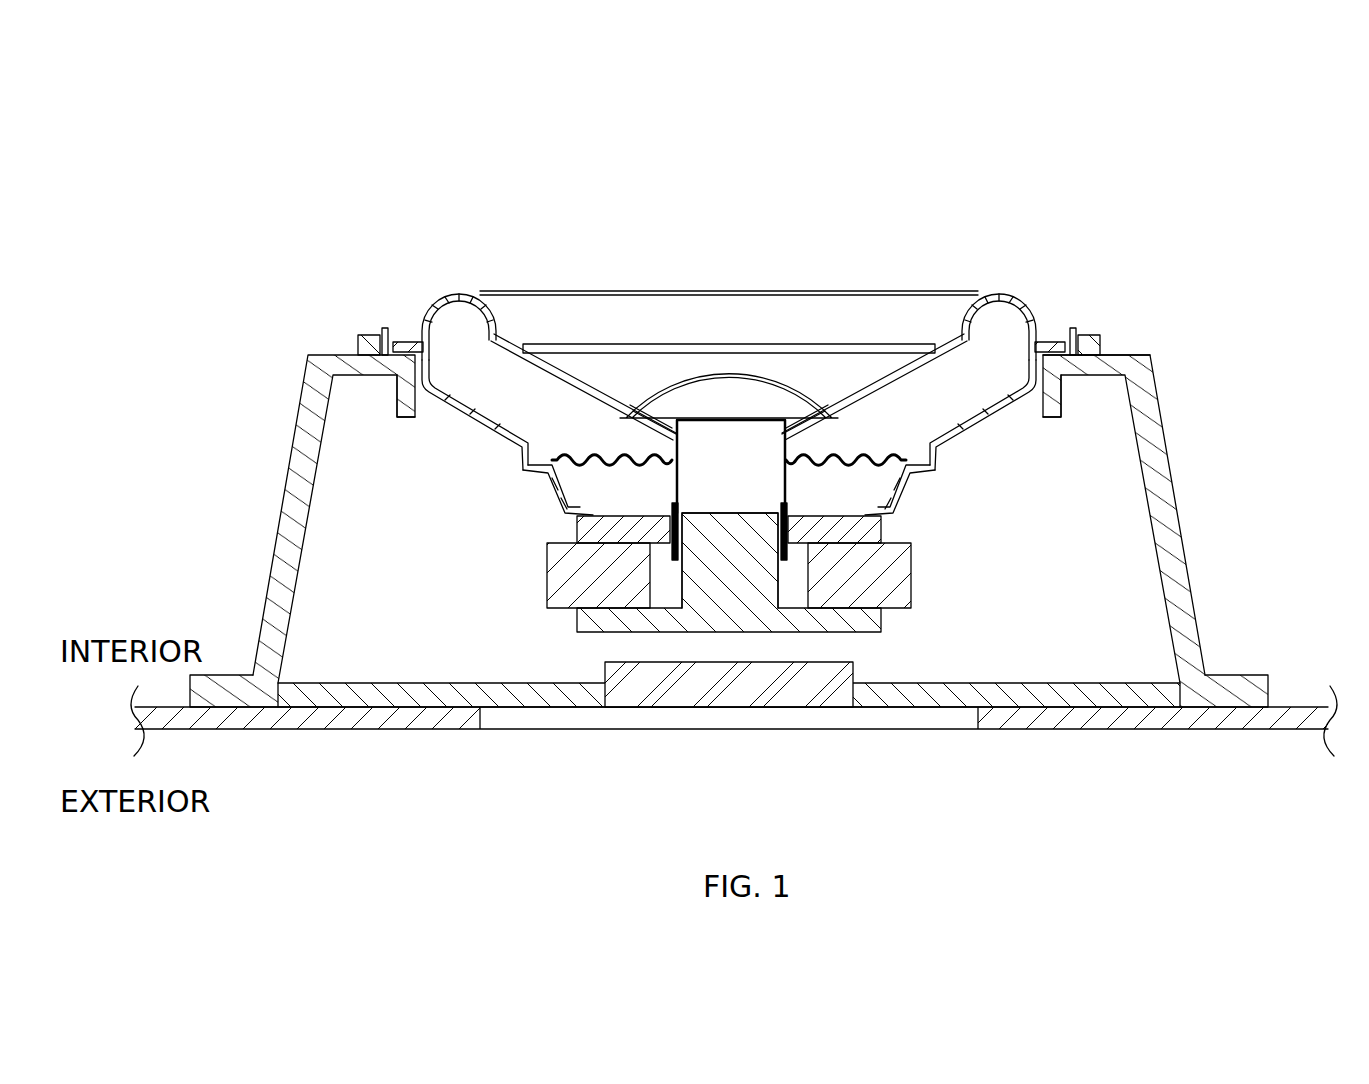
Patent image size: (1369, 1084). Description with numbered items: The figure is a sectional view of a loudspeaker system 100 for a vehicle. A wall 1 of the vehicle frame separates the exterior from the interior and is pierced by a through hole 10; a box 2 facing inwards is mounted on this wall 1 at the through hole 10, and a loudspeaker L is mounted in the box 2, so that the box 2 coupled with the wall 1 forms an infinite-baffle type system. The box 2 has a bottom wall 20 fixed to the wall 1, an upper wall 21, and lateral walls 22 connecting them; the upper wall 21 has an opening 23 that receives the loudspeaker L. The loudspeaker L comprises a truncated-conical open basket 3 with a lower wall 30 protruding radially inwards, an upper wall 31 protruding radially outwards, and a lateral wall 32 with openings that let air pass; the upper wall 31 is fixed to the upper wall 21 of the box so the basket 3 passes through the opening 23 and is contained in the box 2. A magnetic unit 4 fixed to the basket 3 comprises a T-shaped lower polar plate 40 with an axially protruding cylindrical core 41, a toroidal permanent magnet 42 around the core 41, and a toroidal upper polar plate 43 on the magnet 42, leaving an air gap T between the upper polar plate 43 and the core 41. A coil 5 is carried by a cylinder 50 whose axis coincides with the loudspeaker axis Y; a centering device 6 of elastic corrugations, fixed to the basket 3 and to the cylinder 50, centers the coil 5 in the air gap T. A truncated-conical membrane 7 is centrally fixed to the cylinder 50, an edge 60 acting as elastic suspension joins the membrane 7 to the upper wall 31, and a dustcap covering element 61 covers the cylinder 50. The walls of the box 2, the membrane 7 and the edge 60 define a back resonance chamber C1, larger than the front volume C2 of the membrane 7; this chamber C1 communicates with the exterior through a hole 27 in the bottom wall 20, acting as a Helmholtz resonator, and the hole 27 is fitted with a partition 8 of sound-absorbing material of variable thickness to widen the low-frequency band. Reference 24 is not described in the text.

The system 100 is at (1227, 190).
The wall 1 is at (1300, 730).
The box 2 is at (699, 518).
The basket 3 is at (668, 512).
The magnetic unit 4 is at (808, 664).
The coil 5 is at (600, 480).
The centering device 6 is at (878, 448).
The membrane 7 is at (600, 390).
The partition 8 is at (775, 690).
The through hole 10 is at (734, 767).
The bottom wall 20 is at (357, 695).
The upper wall 21 is at (1093, 375).
The lateral walls 22 is at (295, 506).
The opening 23 is at (413, 358).
The inner lip 24 is at (403, 417).
The hole 27 is at (845, 698).
The lower wall 30 is at (843, 500).
The upper wall 31 is at (1050, 348).
The lateral wall 32 is at (997, 440).
The lower polar plate 40 is at (593, 622).
The cylindrical core 41 is at (727, 580).
The permanent magnet 42 is at (300, 690).
The upper polar plate 43 is at (858, 525).
The cylinder 50 is at (787, 481).
The edge 60 is at (565, 310).
The covering element 61 is at (755, 372).
The back resonance chamber C1 is at (1148, 603).
The front volume C2 is at (831, 371).
The loudspeaker L is at (1034, 270).
The air gap T is at (648, 492).
The axis Y is at (733, 273).